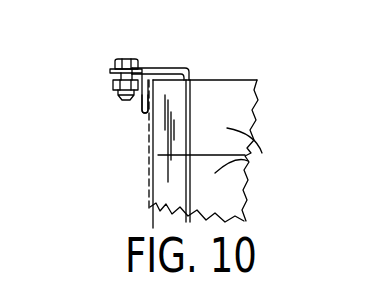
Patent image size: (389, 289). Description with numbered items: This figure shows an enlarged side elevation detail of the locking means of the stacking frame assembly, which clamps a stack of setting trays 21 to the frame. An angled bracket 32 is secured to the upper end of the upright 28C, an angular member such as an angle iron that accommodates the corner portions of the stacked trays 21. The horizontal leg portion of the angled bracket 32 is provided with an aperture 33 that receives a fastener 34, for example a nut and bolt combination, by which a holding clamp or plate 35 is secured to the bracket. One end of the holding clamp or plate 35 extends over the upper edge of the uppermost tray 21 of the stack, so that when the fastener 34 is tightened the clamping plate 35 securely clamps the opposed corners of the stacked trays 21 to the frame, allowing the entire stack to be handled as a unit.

The setting tray 21 is at (248, 162).
The upright 28C is at (160, 177).
The angled bracket 32 is at (143, 100).
The aperture 33 is at (118, 80).
The fastener 34 is at (146, 69).
The holding clamp or plate 35 is at (167, 68).